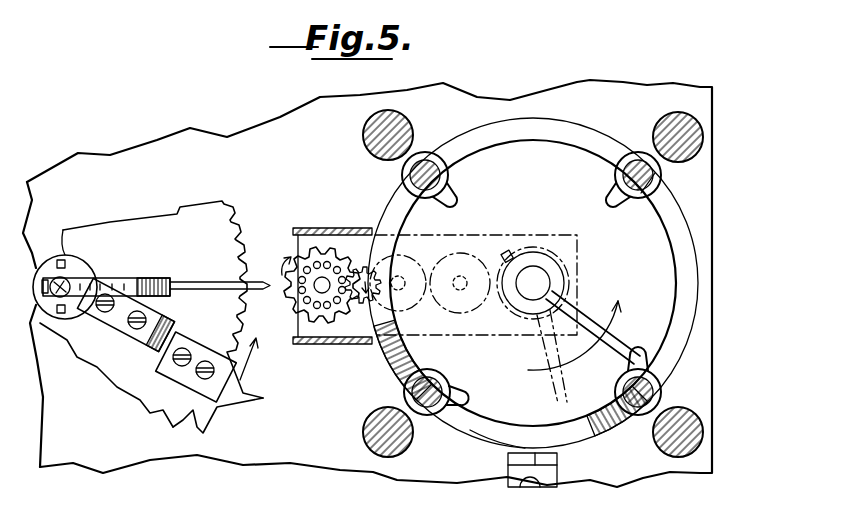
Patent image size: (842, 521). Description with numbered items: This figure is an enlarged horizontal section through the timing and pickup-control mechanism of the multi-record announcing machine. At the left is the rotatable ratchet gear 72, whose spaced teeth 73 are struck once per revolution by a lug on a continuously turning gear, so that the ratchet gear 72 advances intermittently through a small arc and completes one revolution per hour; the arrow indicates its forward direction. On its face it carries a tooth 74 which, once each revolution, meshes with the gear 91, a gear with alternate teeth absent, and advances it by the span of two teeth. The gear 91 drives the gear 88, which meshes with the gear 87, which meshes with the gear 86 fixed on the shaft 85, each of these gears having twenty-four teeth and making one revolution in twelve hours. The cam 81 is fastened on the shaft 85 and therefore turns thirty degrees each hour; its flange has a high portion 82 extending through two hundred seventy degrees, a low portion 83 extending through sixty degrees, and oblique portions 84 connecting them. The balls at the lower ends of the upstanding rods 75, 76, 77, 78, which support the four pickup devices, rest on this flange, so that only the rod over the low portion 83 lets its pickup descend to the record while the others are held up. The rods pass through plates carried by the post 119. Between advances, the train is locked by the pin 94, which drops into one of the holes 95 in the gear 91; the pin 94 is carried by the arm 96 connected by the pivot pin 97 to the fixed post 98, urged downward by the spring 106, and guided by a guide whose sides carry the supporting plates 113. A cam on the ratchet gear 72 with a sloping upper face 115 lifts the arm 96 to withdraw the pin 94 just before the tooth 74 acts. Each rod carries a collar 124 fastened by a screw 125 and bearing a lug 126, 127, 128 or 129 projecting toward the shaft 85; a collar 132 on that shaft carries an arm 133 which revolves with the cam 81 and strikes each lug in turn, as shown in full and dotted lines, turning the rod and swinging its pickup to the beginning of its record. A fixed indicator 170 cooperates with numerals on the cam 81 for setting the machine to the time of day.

The ratchet gear 72 is at (163, 410).
The teeth 73 is at (193, 413).
The tooth 74 is at (245, 385).
The rod 75 is at (662, 195).
The rod 76 is at (430, 184).
The rod 77 is at (428, 402).
The rod 78 is at (630, 388).
The cam 81 is at (545, 158).
The high portion 82 is at (677, 310).
The low portion 83 is at (493, 428).
The oblique portions 84 is at (403, 358).
The shaft 85 is at (562, 253).
The gear 86 is at (537, 250).
The gear 87 is at (470, 247).
The gear 88 is at (362, 258).
The gear 91 is at (302, 303).
The pin 94 is at (283, 285).
The holes 95 is at (322, 262).
The arm 96 is at (193, 282).
The pivot pin 97 is at (58, 265).
The fixed post 98 is at (72, 303).
The spring 106 is at (128, 278).
The supporting plates 113 is at (323, 228).
The sloping upper face 115 is at (167, 320).
The post 119 is at (400, 112).
The collar 124 is at (416, 158).
The screw 125 is at (652, 182).
The lug 126 is at (610, 190).
The lug 127 is at (448, 198).
The lug 128 is at (457, 397).
The lug 129 is at (637, 358).
The collar 132 is at (535, 282).
The arm 133 is at (583, 317).
The fixed indicator 170 is at (543, 458).